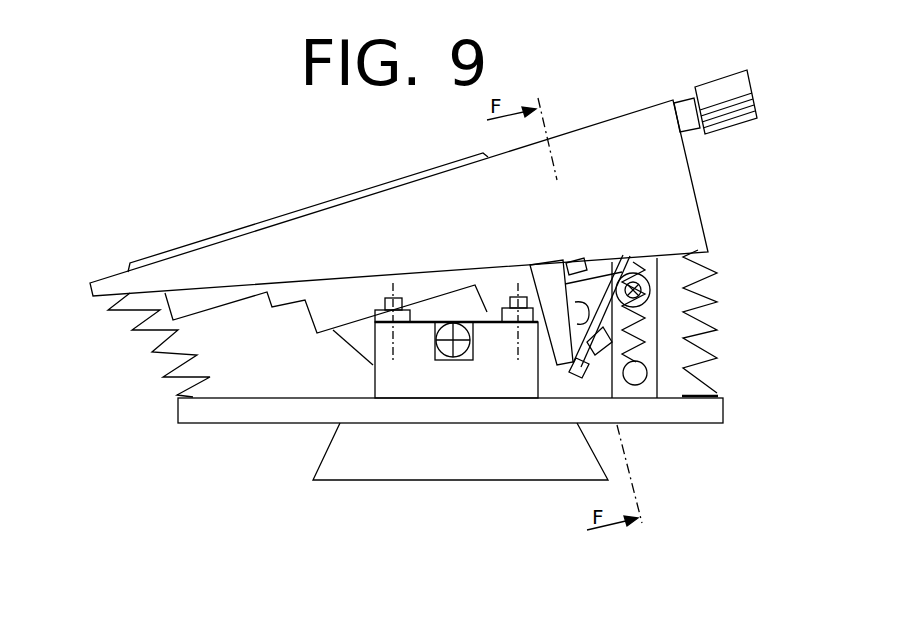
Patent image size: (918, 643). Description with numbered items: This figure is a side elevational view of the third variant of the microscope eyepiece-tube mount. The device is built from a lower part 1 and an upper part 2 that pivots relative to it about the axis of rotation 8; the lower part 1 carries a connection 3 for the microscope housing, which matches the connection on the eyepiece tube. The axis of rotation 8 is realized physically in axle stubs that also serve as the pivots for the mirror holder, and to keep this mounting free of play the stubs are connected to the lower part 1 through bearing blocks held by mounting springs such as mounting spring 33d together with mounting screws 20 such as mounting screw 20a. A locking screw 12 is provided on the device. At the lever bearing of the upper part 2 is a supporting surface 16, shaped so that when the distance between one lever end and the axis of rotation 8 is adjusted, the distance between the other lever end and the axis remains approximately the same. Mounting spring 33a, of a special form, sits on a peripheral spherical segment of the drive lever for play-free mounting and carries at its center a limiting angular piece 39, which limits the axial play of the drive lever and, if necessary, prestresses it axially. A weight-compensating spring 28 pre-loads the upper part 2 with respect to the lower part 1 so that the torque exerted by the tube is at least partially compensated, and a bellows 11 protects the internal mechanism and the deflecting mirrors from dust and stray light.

The lower part 1 is at (212, 424).
The upper part 2 is at (590, 125).
The connection for microscope housing 3 is at (323, 453).
The axis of rotation 8 is at (450, 357).
The bellows 11 is at (158, 342).
The locking screw 12 is at (707, 85).
The supporting surface 16 is at (560, 350).
The mounting screws 20 is at (588, 374).
The mounting screw 20a is at (383, 293).
The weight-compensating spring 28 is at (642, 334).
The bearing mounting spring 33a is at (640, 316).
The bearing mounting spring 33d is at (425, 318).
The angular piece 39 is at (697, 266).